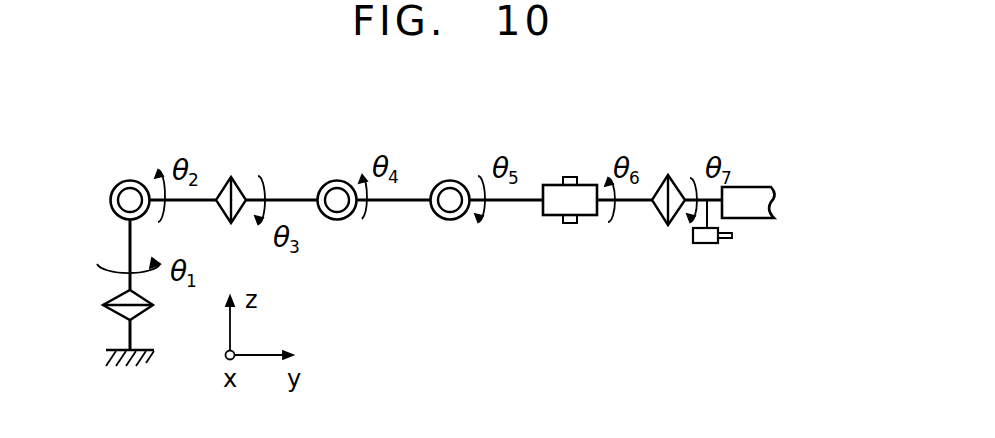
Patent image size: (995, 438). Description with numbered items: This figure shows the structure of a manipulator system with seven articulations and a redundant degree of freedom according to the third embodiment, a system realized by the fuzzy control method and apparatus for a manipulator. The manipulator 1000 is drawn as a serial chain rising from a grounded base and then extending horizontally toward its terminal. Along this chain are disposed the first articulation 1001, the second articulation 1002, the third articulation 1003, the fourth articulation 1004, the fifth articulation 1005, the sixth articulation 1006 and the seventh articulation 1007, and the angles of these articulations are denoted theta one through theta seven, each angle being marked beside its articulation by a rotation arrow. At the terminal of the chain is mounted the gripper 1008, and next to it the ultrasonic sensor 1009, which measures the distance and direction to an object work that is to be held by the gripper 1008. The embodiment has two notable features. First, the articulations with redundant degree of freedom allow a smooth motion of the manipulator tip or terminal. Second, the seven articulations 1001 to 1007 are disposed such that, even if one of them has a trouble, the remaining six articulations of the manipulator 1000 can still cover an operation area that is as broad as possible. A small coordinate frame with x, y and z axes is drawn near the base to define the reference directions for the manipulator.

The manipulator 1000 is at (203, 199).
The first articulation 1001 is at (113, 308).
The second articulation 1002 is at (130, 179).
The third articulation 1003 is at (235, 177).
The fourth articulation 1004 is at (337, 221).
The fifth articulation 1005 is at (448, 180).
The sixth articulation 1006 is at (556, 217).
The seventh articulation 1007 is at (692, 124).
The gripper 1008 is at (751, 186).
The ultrasonic sensor 1009 is at (705, 244).